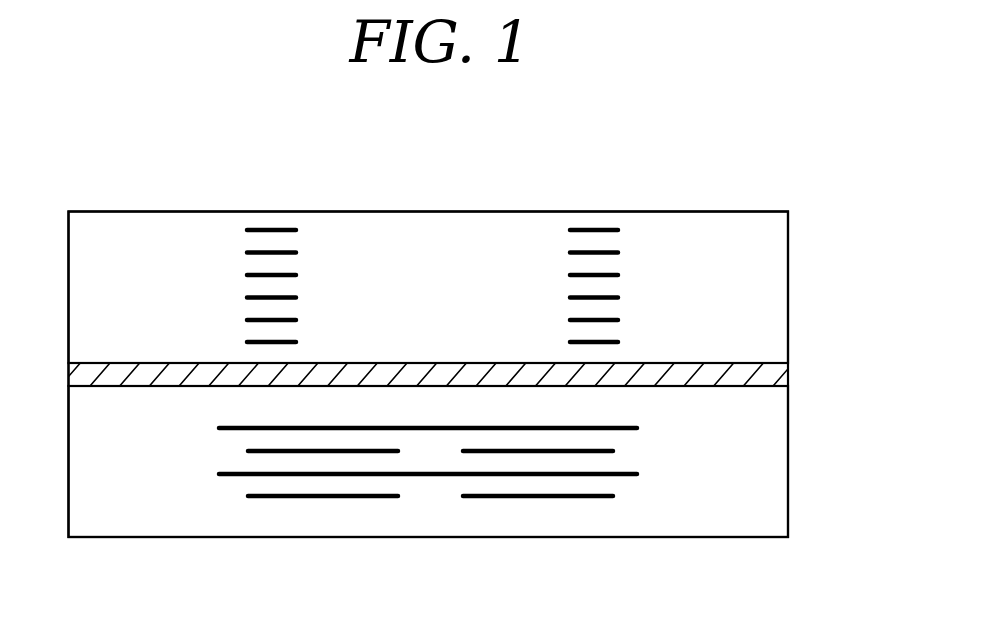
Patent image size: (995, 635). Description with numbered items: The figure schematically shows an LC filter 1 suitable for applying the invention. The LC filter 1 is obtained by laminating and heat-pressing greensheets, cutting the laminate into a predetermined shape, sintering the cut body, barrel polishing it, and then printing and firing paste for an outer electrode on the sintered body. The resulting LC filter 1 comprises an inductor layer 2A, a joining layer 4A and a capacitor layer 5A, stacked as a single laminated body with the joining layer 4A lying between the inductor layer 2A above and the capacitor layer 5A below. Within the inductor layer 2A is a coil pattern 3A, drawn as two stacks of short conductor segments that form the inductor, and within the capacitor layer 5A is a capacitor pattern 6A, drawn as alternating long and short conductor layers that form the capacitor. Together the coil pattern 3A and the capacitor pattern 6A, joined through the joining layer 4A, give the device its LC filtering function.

The LC filter 1 is at (801, 207).
The inductor layer 2A is at (502, 235).
The coil pattern 3A is at (612, 254).
The joining layer 4A is at (770, 380).
The capacitor layer 5A is at (769, 482).
The capacitor pattern 6A is at (581, 476).